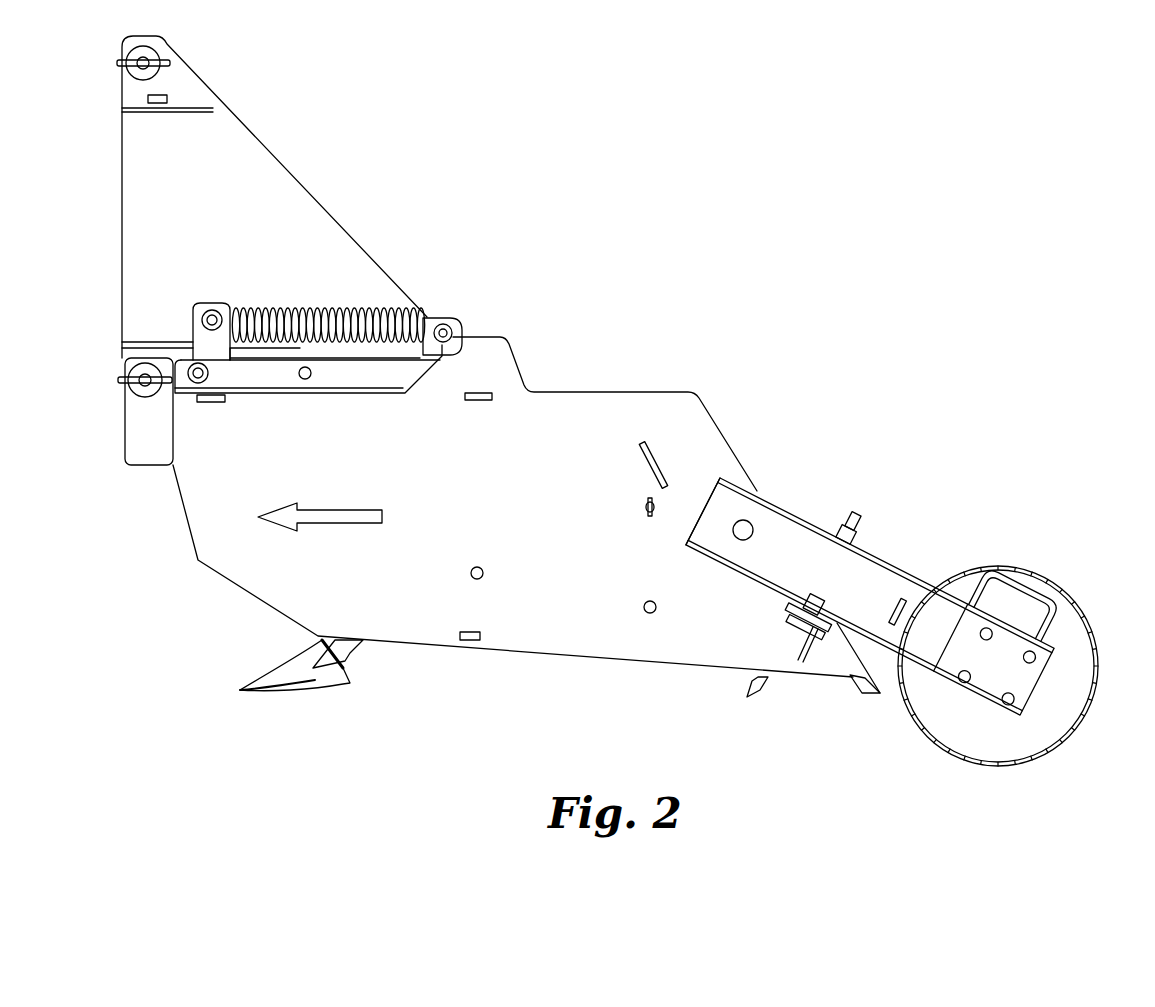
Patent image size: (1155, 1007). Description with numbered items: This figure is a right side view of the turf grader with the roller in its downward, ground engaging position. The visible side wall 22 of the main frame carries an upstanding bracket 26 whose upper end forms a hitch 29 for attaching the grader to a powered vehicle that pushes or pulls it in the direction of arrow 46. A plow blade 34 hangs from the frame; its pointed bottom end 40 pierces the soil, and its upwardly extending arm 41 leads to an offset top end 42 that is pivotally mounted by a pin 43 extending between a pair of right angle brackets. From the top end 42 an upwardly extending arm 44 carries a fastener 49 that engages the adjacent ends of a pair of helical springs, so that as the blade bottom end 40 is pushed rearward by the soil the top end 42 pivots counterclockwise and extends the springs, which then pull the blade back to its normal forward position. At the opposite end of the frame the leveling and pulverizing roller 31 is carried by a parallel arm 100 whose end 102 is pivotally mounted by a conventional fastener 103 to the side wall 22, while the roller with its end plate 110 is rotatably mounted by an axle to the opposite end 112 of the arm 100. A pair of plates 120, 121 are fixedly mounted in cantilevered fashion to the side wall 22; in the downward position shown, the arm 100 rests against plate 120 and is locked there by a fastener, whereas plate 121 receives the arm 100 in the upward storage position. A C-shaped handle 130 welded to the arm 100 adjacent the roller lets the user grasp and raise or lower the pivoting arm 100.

The side wall 22 is at (580, 640).
The upstanding bracket 26 is at (245, 173).
The hitch 29 is at (142, 72).
The leveling and pulverizing roller 31 is at (1033, 566).
The plow blade 34 is at (305, 680).
The bottom end 40 is at (262, 685).
The upwardly extending arm 41 is at (356, 662).
The offset top end 42 is at (262, 355).
The pin 43 is at (198, 385).
The upwardly extending arm 44 is at (200, 337).
The arrow 46 is at (325, 510).
The fastener 49 is at (212, 310).
The parallel arm 100 is at (880, 582).
The end 102 is at (717, 513).
The fastener 103 is at (745, 521).
The end plate 110 is at (1080, 658).
The end 112 is at (1000, 668).
The plate 120 is at (822, 640).
The plate 121 is at (642, 467).
The handle 130 is at (1060, 618).